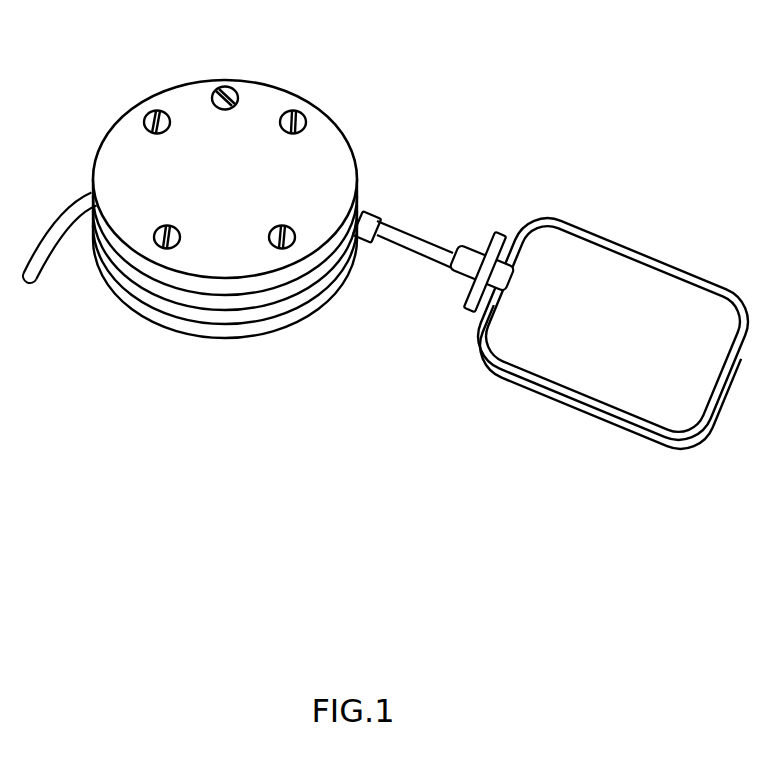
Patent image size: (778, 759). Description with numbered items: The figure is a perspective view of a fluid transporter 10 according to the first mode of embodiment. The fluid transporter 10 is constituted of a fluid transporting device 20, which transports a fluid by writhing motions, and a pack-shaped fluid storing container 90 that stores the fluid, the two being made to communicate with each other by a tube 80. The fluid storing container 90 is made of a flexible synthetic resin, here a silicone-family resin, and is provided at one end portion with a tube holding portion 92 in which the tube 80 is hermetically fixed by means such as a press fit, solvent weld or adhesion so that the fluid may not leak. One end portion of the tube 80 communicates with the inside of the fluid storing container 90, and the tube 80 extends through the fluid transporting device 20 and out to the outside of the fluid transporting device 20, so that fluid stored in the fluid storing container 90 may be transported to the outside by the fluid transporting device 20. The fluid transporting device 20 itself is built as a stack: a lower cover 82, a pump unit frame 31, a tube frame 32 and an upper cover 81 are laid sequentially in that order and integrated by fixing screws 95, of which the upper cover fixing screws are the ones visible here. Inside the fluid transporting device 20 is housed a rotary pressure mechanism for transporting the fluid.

The fluid transporter 10 is at (485, 68).
The fluid transporting device 20 is at (248, 215).
The pump unit frame 31 is at (333, 272).
The tube frame 32 is at (330, 260).
The tube 80 is at (43, 216).
The upper cover 81 is at (156, 90).
The lower cover 82 is at (228, 338).
The fluid storing container 90 is at (633, 250).
The tube holding portion 92 is at (497, 233).
The fixing screws 95 is at (226, 80).